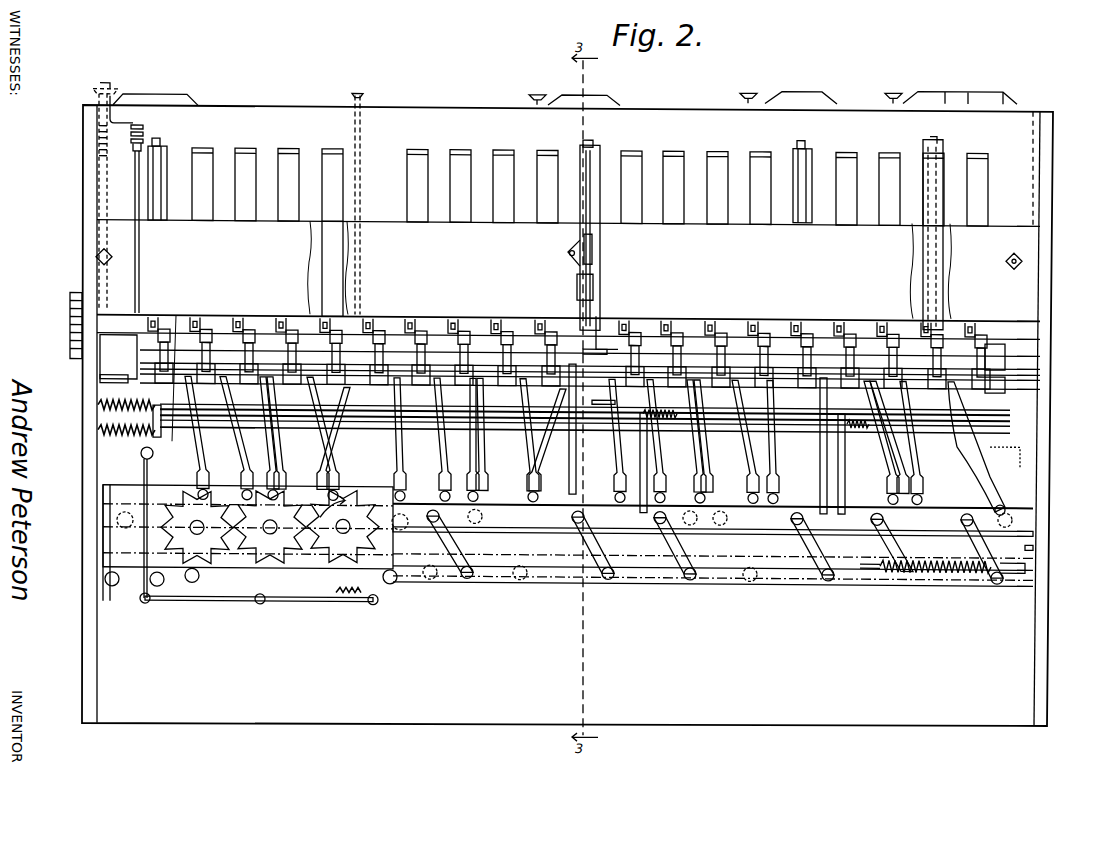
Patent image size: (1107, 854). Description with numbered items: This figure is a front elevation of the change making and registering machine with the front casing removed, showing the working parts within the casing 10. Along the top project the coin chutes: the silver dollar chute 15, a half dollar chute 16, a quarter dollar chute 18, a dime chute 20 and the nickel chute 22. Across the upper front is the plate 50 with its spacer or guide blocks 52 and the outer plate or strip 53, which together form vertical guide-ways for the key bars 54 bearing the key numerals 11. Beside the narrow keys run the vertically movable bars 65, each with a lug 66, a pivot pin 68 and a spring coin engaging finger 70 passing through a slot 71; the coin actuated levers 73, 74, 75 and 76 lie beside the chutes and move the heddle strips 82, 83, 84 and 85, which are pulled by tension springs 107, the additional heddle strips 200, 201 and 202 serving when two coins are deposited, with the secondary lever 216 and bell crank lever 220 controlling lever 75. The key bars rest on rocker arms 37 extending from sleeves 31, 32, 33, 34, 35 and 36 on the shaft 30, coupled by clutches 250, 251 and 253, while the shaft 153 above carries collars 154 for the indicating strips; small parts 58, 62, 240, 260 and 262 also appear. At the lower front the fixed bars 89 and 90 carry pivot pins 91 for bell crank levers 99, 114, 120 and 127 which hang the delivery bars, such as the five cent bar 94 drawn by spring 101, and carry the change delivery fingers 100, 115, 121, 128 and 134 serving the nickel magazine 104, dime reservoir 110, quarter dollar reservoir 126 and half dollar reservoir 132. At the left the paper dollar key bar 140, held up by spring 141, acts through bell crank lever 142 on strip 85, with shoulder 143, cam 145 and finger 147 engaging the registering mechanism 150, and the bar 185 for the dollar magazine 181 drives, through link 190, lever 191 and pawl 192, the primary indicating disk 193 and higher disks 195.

The casing 10 is at (1045, 143).
The keys 11 is at (458, 150).
The silver dollar chute 15 is at (158, 100).
The half dollar chute 16 is at (596, 96).
The quarter dollar chute 18 is at (803, 93).
The dime chute 20 is at (930, 92).
The nickel chute 22 is at (990, 93).
The shaft 30 is at (140, 362).
The sleeve 31 is at (569, 359).
The sleeve 32 is at (240, 392).
The sleeve 33 is at (283, 392).
The sleeve 34 is at (668, 393).
The sleeve 35 is at (853, 395).
The sleeve 36 is at (980, 394).
The rocker arms 37 is at (500, 357).
The plate 50 is at (386, 189).
The spacer or guide blocks 52 is at (312, 235).
The outer plate or strip 53 is at (306, 252).
The key bars 54 is at (338, 260).
The latch 58 is at (520, 331).
The latch bar 62 is at (440, 330).
The vertically movable bar 65 is at (577, 281).
The lug 66 is at (412, 352).
The pivot pin 68 is at (733, 343).
The spring coin engaging finger 70 is at (584, 204).
The slot 71 is at (162, 145).
The coin actuated lever 73 is at (953, 322).
The coin actuated lever 74 is at (815, 328).
The coin actuated lever 75 is at (603, 322).
The coin actuated lever 76 is at (176, 325).
The dime heddle strip 82 is at (1010, 421).
The quarter dollar heddle strip 83 is at (1010, 430).
The half dollar heddle strip 84 is at (1010, 439).
The dollar heddle strip 85 is at (1007, 459).
The fixed parallel bar 89 is at (1034, 540).
The fixed parallel bar 90 is at (1015, 522).
The pivot pins 91 is at (713, 550).
The five cent delivery bar 94 is at (720, 580).
The bell crank levers 99 is at (663, 572).
The change discharge fingers 100 is at (695, 455).
The helical tension spring 101 is at (935, 574).
The nickel magazine 104 is at (990, 475).
The tension springs 107 is at (98, 408).
The dime reservoir 110 is at (932, 520).
The bell crank levers 114 is at (440, 580).
The change delivery fingers 115 is at (455, 437).
The bell crank levers 120 is at (735, 542).
The change delivery fingers 121 is at (975, 402).
The quarter dollar reservoir 126 is at (790, 496).
The bell crank levers 127 is at (786, 580).
The change delivery fingers 128 is at (330, 443).
The half dollar reservoir 132 is at (572, 484).
The change delivery finger 134 is at (545, 448).
The paper dollar key bar 140 is at (112, 90).
The spring 141 is at (140, 127).
The bell crank lever 142 is at (160, 436).
The shoulder 143 is at (100, 378).
The cam 145 is at (153, 330).
The projecting finger 147 is at (70, 343).
The counting or registering mechanism 150 is at (70, 322).
The shaft 153 is at (1010, 348).
The collars 154 is at (484, 330).
The dollar magazine 181 is at (165, 467).
The bar 185 is at (141, 456).
The link 190 is at (146, 565).
The lever 191 is at (212, 592).
The pawl 192 is at (375, 600).
The primary indicating disk 193 is at (345, 560).
The higher disks 195 is at (192, 560).
The heddle strip 200 is at (496, 420).
The heddle strip 201 is at (688, 408).
The heddle strip 202 is at (877, 414).
The secondary lever 216 is at (621, 394).
The bell crank lever 220 is at (622, 332).
The screw 240 is at (747, 86).
The clutch 250 is at (539, 87).
The clutch 251 is at (893, 86).
The clutch 253 is at (372, 397).
The screw 260 is at (99, 87).
The bar 262 is at (108, 318).